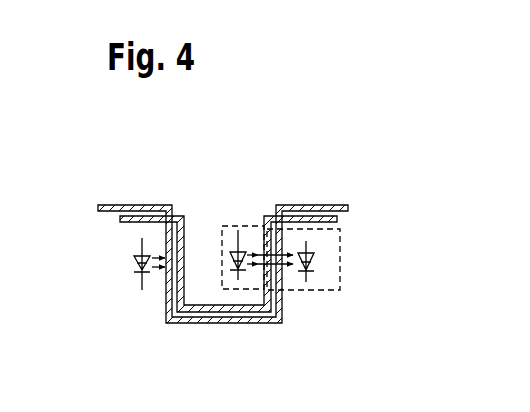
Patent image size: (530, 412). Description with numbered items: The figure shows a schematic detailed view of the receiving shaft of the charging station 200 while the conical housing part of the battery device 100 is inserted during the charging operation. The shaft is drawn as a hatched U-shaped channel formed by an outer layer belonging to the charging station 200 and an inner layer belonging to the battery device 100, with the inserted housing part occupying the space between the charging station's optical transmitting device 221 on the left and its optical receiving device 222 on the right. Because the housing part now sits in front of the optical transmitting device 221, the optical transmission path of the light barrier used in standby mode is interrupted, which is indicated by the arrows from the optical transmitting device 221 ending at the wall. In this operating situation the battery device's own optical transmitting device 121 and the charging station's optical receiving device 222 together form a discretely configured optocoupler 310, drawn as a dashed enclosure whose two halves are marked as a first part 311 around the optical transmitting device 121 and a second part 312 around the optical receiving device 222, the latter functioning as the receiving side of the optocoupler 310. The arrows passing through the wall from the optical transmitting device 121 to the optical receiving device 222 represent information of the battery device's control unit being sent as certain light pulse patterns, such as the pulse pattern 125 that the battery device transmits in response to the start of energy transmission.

The battery device 100 is at (341, 205).
The charging station 200 is at (120, 217).
The pulse pattern 125 is at (276, 218).
The optocoupler 310 is at (279, 263).
The transmitter unit 311 is at (222, 231).
The transmitter of optocoupler 312 is at (320, 274).
The optical transmitting device 121 is at (238, 232).
The optical transmitting device 221 is at (134, 256).
The optical receiving device 222 is at (317, 257).